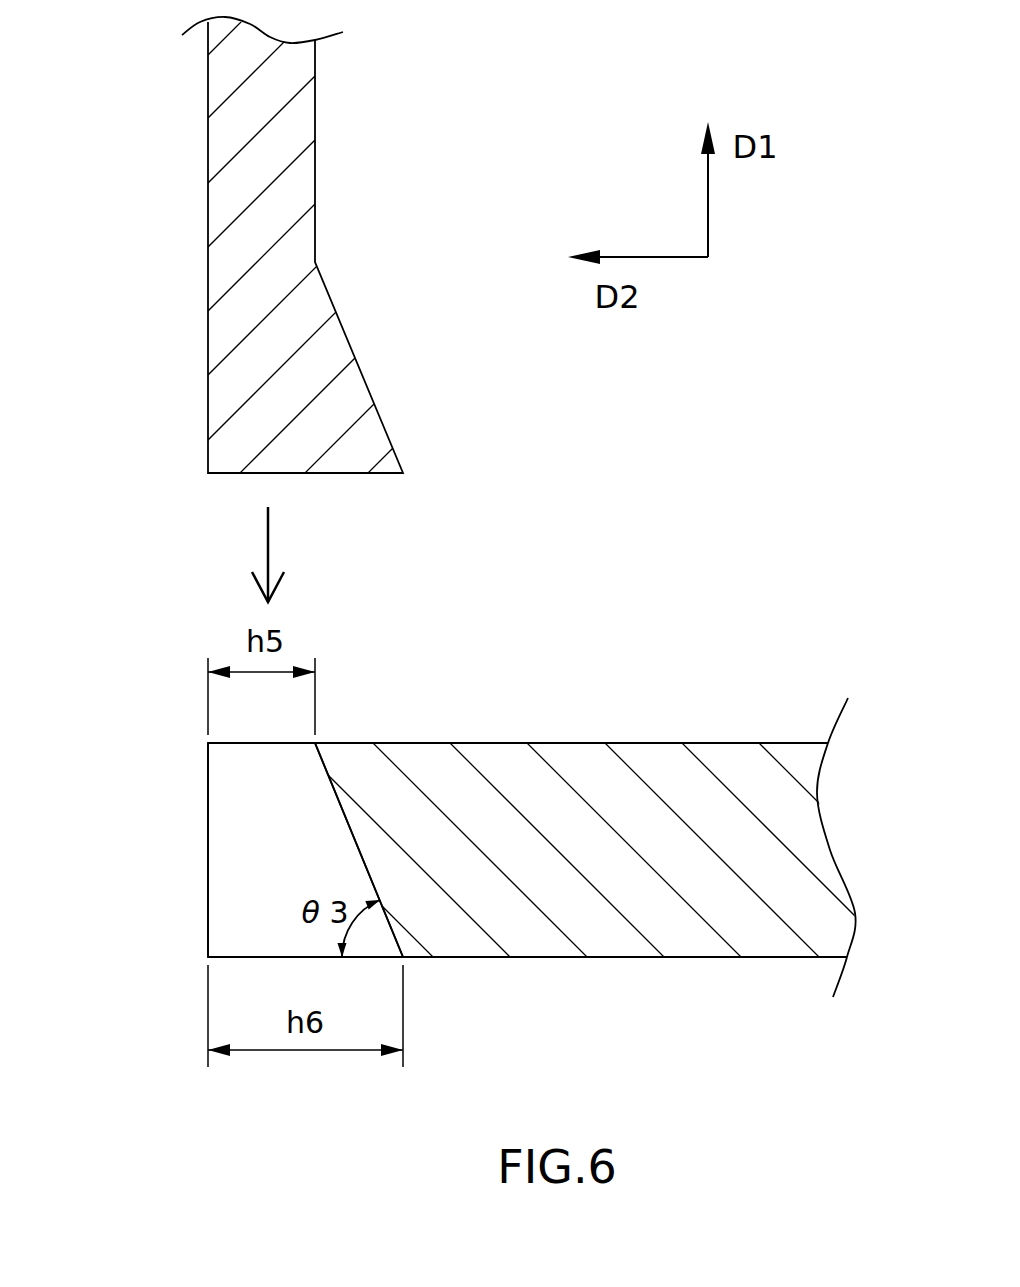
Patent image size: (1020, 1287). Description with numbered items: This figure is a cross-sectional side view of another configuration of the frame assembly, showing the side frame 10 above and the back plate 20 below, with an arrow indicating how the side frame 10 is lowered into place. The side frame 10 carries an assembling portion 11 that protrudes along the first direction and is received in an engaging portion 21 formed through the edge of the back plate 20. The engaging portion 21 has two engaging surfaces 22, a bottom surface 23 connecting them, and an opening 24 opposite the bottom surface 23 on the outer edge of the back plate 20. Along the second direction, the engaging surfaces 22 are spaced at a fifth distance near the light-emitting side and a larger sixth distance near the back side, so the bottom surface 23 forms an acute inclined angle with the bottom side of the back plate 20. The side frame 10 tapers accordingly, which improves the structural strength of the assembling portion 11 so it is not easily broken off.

The side frame 10 is at (178, 135).
The assembling portion 11 is at (228, 387).
The back plate 20 is at (605, 728).
The engaging portion 21 is at (188, 753).
The engaging surface 22 is at (238, 828).
The bottom surface 23 is at (345, 815).
The opening 24 is at (208, 863).